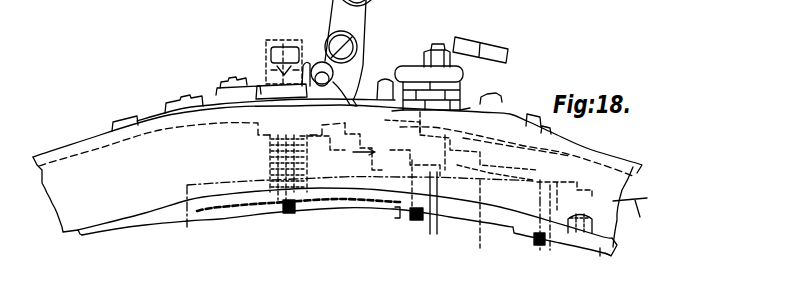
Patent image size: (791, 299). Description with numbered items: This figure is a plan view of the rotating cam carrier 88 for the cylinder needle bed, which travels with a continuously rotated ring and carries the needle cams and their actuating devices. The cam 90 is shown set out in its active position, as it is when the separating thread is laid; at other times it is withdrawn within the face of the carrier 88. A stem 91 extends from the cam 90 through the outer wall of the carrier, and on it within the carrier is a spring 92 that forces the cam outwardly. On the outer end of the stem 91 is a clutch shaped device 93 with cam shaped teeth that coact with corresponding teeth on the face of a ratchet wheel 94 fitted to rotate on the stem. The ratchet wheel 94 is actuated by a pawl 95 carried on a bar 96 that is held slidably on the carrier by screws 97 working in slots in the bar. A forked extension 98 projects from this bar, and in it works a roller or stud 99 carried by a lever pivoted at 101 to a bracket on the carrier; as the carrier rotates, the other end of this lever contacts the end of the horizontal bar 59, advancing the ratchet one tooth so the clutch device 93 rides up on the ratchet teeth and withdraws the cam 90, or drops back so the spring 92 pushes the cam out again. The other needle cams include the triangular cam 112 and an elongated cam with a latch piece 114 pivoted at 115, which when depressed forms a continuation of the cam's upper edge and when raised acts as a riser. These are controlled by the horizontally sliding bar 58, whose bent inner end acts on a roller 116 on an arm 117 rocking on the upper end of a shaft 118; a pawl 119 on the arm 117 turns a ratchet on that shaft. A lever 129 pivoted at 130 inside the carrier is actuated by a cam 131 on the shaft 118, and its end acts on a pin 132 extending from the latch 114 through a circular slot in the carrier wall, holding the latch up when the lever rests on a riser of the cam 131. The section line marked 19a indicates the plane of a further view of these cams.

The rotating cam carrier 88 is at (337, 174).
The bar 96 is at (112, 127).
The screws 97 is at (171, 101).
The pawl 95 is at (218, 92).
The clutch shaped device 93 is at (268, 56).
The ratchet wheel 94 is at (262, 78).
The stem 91 is at (283, 44).
The spring 92 is at (316, 195).
The forked extension 98 is at (307, 62).
The roller or stud 99 is at (319, 62).
The pivot 101 is at (360, 24).
The pawl 119 is at (397, 82).
The arm 117 is at (406, 67).
The roller 116 is at (433, 45).
The shaft 118 is at (462, 42).
The horizontally sliding bar 58 is at (508, 54).
The horizontal bar 59 is at (462, 8).
The section line 19a is at (499, 176).
The cam 90 is at (233, 213).
The pivot 130 is at (353, 240).
The triangular cam 112 is at (402, 218).
The cam 131 is at (437, 211).
The lever 129 is at (472, 223).
The pin 132 is at (528, 225).
The latch piece 114 is at (553, 250).
The pivot 115 is at (591, 268).